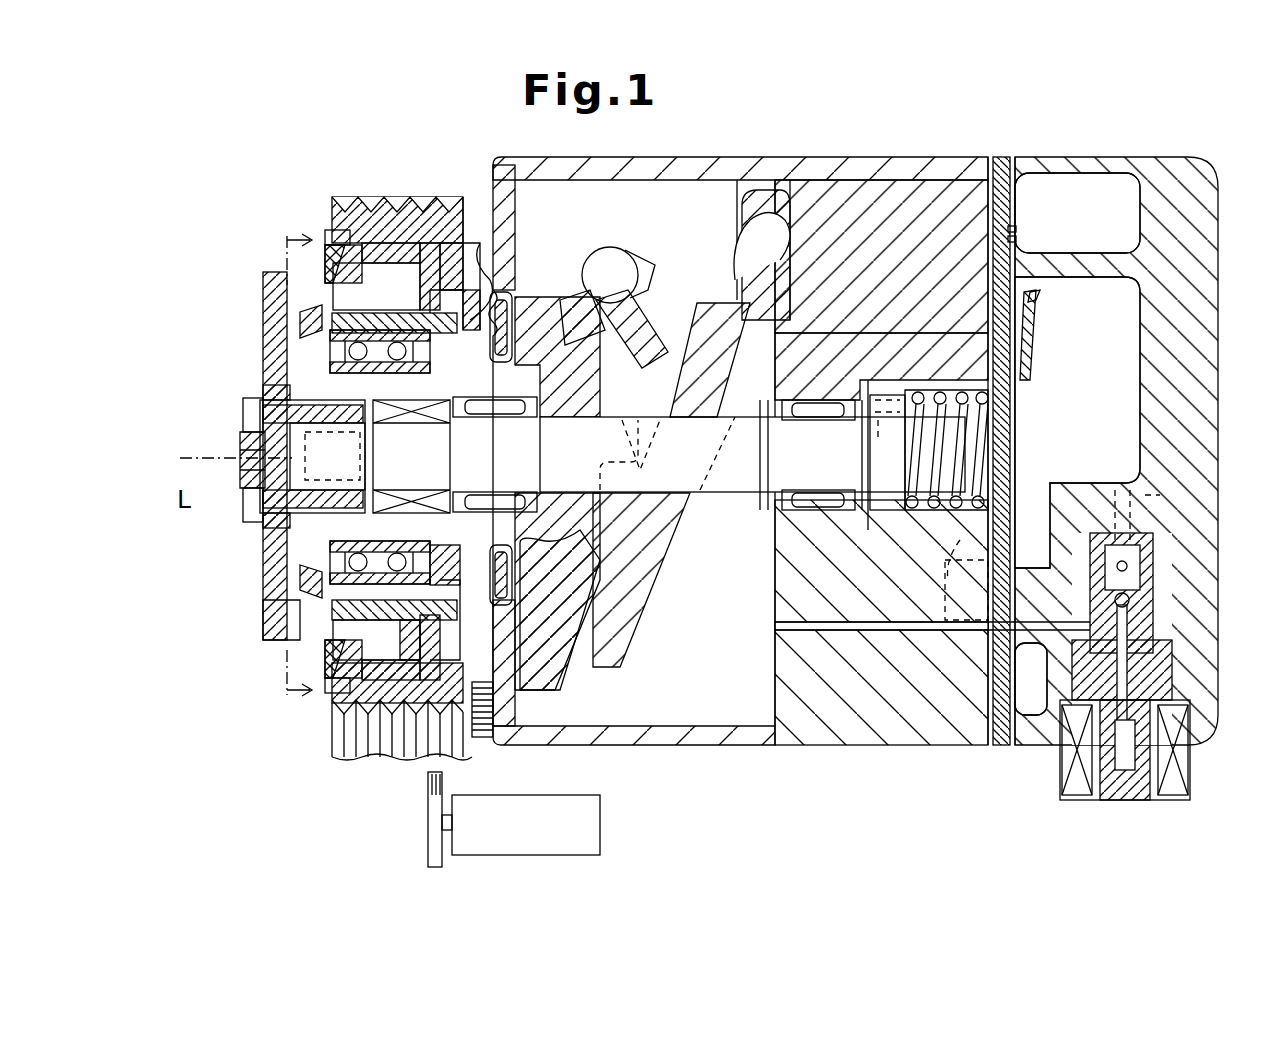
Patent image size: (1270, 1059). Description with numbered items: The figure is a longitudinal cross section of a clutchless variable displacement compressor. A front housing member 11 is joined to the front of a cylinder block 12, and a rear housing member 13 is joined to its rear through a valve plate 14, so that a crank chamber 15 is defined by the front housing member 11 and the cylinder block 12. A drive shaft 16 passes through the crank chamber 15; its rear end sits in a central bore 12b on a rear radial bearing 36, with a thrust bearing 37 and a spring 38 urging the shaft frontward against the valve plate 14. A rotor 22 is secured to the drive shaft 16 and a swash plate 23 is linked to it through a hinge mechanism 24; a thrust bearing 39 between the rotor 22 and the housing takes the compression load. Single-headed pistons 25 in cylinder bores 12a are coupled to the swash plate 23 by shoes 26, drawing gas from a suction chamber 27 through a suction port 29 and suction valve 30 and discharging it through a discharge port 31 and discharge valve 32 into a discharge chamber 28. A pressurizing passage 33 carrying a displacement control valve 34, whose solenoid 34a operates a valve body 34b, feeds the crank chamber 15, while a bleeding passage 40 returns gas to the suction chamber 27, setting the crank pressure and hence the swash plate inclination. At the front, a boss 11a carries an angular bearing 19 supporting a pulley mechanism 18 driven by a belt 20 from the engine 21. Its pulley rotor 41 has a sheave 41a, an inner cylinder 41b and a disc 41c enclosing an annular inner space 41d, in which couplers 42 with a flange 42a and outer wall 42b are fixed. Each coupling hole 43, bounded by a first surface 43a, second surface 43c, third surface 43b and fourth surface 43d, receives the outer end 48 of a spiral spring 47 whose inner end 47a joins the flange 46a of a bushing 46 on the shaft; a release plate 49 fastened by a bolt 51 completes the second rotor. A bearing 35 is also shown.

The front housing member 11 is at (700, 745).
The boss 11a is at (432, 423).
The cylinder block 12 is at (862, 745).
The cylinder bore 12a is at (930, 180).
The central bore 12b is at (888, 505).
The rear housing member 13 is at (1218, 388).
The valve plate 14 is at (1001, 745).
The crank chamber 15 is at (726, 682).
The drive shaft 16 is at (715, 492).
The pulley mechanism 18 is at (276, 181).
The angular bearing 19 is at (394, 448).
The belt 20 is at (442, 760).
The engine 21 is at (600, 850).
The rotor 22 is at (550, 690).
The swash plate 23 is at (620, 667).
The hinge mechanism 24 is at (598, 236).
The single-headed piston 25 is at (830, 180).
The shoes 26 is at (760, 190).
The suction chamber 27 is at (1090, 224).
The discharge chamber 28 is at (1080, 392).
The suction port 29 is at (1016, 240).
The suction valve 30 is at (1016, 230).
The discharge port 31 is at (1032, 338).
The discharge valve 32 is at (1036, 305).
The pressurizing passage 33 is at (745, 626).
The displacement control valve 34 is at (1062, 800).
The solenoid 34a is at (1188, 760).
The valve body 34b is at (1129, 600).
The radial bearing 35 is at (492, 417).
The rear radial bearing 36 is at (812, 420).
The thrust bearing 37 is at (878, 385).
The spring 38 is at (945, 385).
The thrust bearing 39 is at (506, 310).
The bleeding passage 40 is at (928, 507).
The pulley rotor 41 is at (480, 260).
The sheave 41a is at (452, 243).
The inner cylinder 41b is at (418, 545).
The disc 41c is at (466, 266).
The annular inner space 41d is at (490, 575).
The coupler 42 is at (418, 197).
The flange 42a is at (430, 362).
The outer wall 42b is at (378, 197).
The coupling hole 43 is at (355, 243).
The first surface 43a is at (350, 263).
The third surface 43b is at (300, 320).
The second surface 43c is at (400, 638).
The fourth surface 43d is at (340, 243).
The bushing 46 is at (365, 440).
The flange 46a is at (243, 415).
The spiral spring 47 is at (263, 350).
The inner end 47a is at (263, 392).
The outer end 48 is at (325, 238).
The release plate 49 is at (263, 612).
The bolt 51 is at (236, 468).